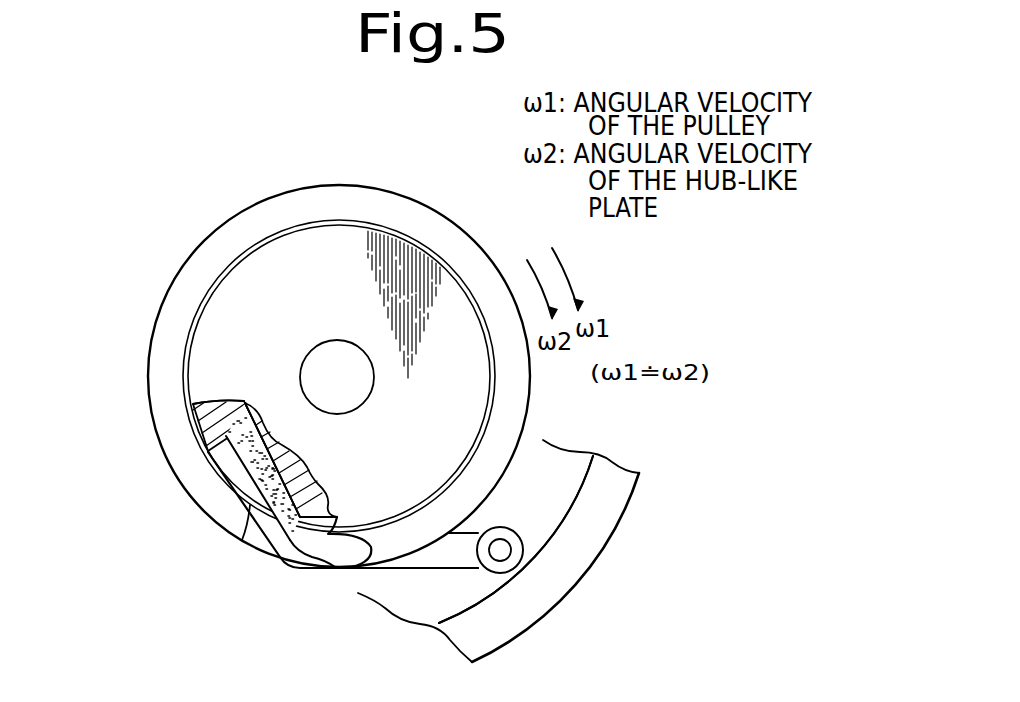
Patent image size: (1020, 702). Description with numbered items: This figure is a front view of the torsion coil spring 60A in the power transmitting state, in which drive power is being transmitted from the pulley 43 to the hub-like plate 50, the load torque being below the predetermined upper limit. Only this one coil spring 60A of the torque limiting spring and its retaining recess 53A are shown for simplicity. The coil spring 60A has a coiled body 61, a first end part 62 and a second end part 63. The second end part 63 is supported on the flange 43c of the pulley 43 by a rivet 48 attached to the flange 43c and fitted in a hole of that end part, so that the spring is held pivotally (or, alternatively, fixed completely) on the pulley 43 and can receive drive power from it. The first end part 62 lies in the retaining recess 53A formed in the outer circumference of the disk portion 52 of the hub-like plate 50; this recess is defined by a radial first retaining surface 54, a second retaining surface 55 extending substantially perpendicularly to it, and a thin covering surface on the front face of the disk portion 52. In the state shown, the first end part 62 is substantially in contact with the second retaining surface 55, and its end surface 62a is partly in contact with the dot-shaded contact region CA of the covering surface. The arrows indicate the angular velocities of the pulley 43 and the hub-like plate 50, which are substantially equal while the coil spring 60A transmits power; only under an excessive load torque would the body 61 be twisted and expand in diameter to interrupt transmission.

The hub-like plate 50 is at (274, 268).
The disk portion 52 is at (237, 288).
The body 61 is at (175, 308).
The torsion coil spring 60A is at (155, 378).
The retaining recess 53A is at (268, 400).
The contact region CA is at (288, 453).
The second retaining surface 55 is at (330, 482).
The first retaining surface 54 is at (213, 463).
The end surface 62a is at (248, 480).
The first end part 62 is at (242, 540).
The second end part 63 is at (440, 558).
The rivet 48 is at (503, 550).
The pulley 43 is at (606, 547).
The flange 43c is at (478, 588).